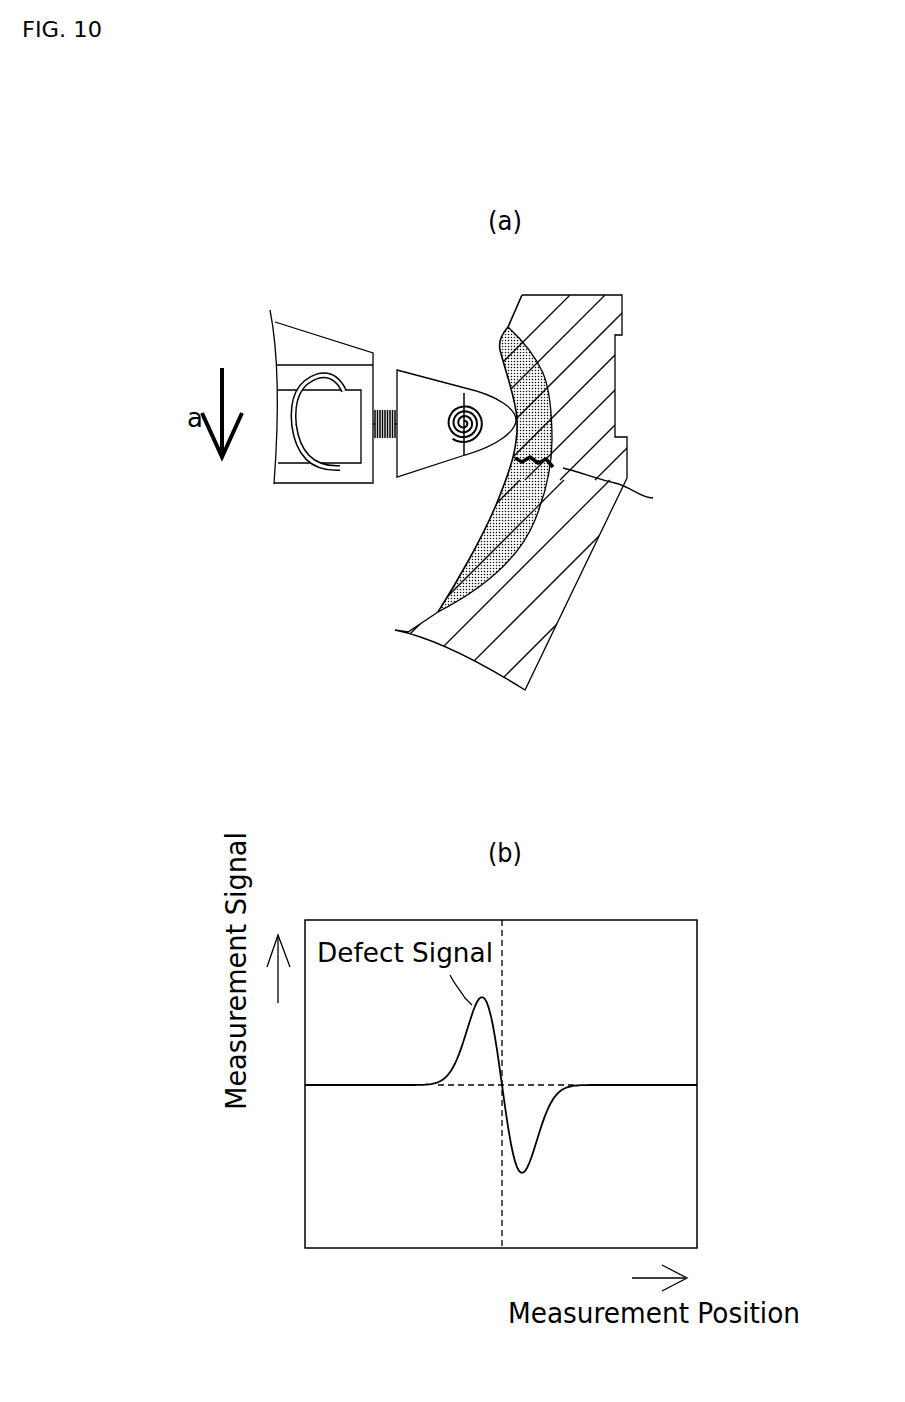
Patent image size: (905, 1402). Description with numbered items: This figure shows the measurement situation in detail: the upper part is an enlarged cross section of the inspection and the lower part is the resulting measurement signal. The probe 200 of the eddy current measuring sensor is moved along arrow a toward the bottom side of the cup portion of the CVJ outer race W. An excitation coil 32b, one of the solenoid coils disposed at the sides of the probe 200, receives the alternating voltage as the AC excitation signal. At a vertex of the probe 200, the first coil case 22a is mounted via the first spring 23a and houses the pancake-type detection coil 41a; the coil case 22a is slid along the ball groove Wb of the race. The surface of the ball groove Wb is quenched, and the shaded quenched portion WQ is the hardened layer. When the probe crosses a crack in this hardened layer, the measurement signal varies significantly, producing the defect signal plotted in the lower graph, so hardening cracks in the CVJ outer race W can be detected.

The probe 200 is at (341, 305).
The first coil case 22a is at (415, 382).
The first spring 23a is at (388, 443).
The excitation coil 32b is at (320, 467).
The detection coil 41a is at (462, 453).
The CVJ outer race W is at (653, 354).
The ball groove Wb is at (477, 552).
The quenched portion (hardened layer) WQ is at (508, 573).